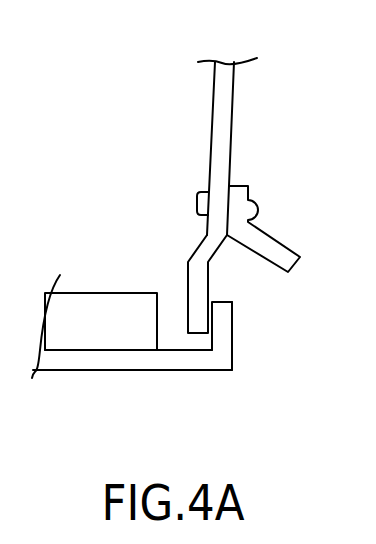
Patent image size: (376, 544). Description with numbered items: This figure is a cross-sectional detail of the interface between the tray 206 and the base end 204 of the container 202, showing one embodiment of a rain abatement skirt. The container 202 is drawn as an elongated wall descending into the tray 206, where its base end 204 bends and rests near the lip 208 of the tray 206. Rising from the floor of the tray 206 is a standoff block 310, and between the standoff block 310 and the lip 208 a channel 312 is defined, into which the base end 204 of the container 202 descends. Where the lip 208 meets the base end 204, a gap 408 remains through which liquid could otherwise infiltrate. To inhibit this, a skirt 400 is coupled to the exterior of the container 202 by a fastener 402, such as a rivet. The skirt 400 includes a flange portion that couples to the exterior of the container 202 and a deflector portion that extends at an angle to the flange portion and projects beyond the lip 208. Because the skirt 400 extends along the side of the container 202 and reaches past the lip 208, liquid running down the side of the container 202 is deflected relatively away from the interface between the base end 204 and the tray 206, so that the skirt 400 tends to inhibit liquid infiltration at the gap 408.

The container 202 is at (228, 84).
The base end 204 is at (202, 257).
The tray 206 is at (178, 388).
The lip 208 is at (226, 335).
The third standoff block 310 is at (79, 337).
The channel 312 is at (160, 282).
The skirt 400 is at (243, 195).
The fastener 402 is at (200, 200).
The gap 408 is at (213, 308).